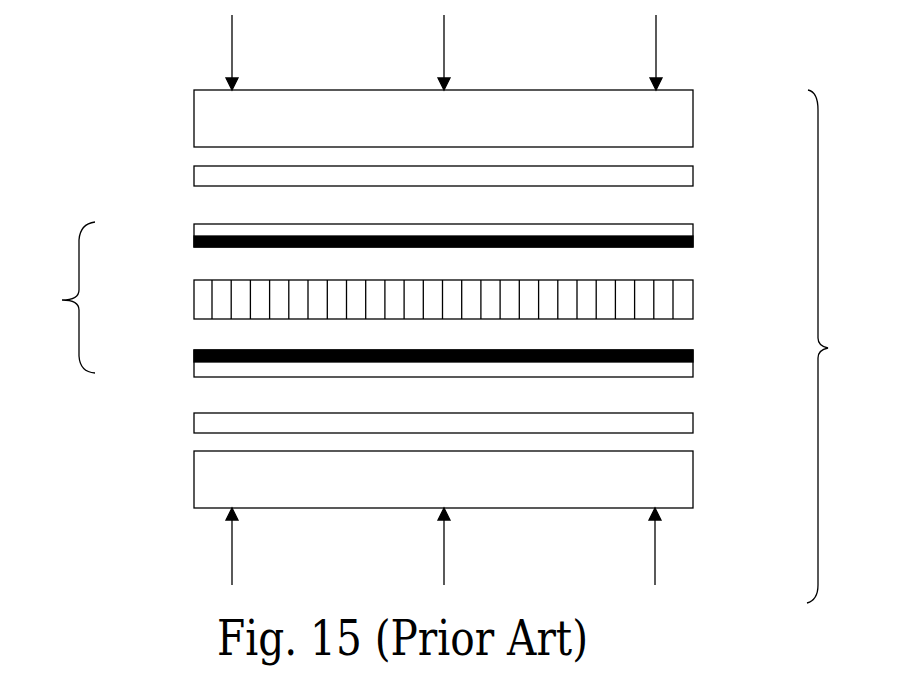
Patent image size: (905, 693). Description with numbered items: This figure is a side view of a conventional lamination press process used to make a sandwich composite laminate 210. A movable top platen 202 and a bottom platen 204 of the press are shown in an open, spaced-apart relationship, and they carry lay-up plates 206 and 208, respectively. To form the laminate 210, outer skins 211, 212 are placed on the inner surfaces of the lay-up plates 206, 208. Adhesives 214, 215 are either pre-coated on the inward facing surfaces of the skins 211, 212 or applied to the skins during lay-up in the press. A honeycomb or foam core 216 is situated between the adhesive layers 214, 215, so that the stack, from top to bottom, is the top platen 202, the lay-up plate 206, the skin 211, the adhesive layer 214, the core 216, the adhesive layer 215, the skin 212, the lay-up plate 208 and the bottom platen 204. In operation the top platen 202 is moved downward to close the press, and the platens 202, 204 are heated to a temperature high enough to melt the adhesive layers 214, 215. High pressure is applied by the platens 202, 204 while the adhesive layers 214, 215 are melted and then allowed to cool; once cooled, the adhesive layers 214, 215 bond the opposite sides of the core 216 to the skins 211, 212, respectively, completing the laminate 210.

The movable top platen 202 is at (213, 110).
The bottom platen 204 is at (213, 491).
The lay-up plate 206 is at (213, 170).
The lay-up plate 208 is at (213, 417).
The laminate 210 is at (58, 297).
The outer skin 211 is at (213, 226).
The outer skin 212 is at (213, 377).
The adhesive layer 214 is at (693, 247).
The adhesive layer 215 is at (693, 361).
The honeycomb or foam core 216 is at (232, 302).